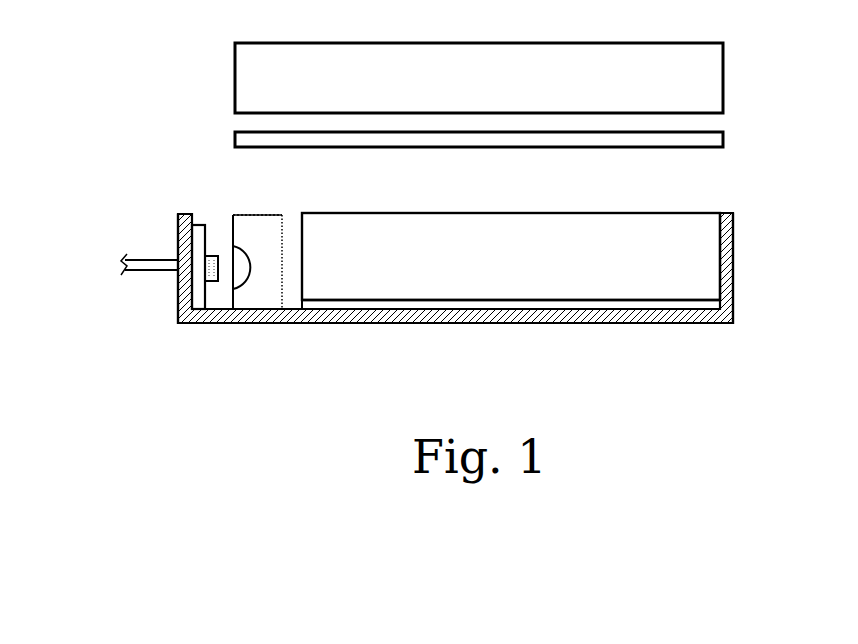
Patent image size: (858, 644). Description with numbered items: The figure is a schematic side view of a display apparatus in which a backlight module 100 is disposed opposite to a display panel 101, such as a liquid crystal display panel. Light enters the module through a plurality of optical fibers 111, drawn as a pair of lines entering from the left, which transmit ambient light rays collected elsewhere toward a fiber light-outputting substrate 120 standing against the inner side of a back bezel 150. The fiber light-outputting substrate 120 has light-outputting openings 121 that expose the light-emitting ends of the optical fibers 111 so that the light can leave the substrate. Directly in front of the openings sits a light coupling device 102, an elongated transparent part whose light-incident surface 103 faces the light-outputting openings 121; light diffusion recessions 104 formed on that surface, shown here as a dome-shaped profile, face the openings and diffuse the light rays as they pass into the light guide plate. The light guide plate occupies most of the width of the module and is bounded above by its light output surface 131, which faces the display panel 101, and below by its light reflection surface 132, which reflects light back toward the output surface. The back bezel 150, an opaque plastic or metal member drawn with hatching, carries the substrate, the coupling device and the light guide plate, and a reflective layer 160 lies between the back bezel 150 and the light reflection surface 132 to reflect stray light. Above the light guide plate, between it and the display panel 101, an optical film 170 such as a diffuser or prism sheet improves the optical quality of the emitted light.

The backlight module 100 is at (742, 262).
The display panel 101 is at (713, 73).
The light coupling device 102 is at (267, 213).
The light-incident surface 103 is at (231, 227).
The light diffusion recessions 104 is at (253, 289).
The optical fibers 111 is at (150, 272).
The fiber light-outputting substrate 120 is at (198, 224).
The light-outputting openings 121 is at (215, 256).
The light output surface 131 is at (570, 215).
The light reflection surface 132 is at (512, 300).
The back bezel 150 is at (717, 323).
The reflective layer 160 is at (665, 310).
The optical film 170 is at (715, 140).